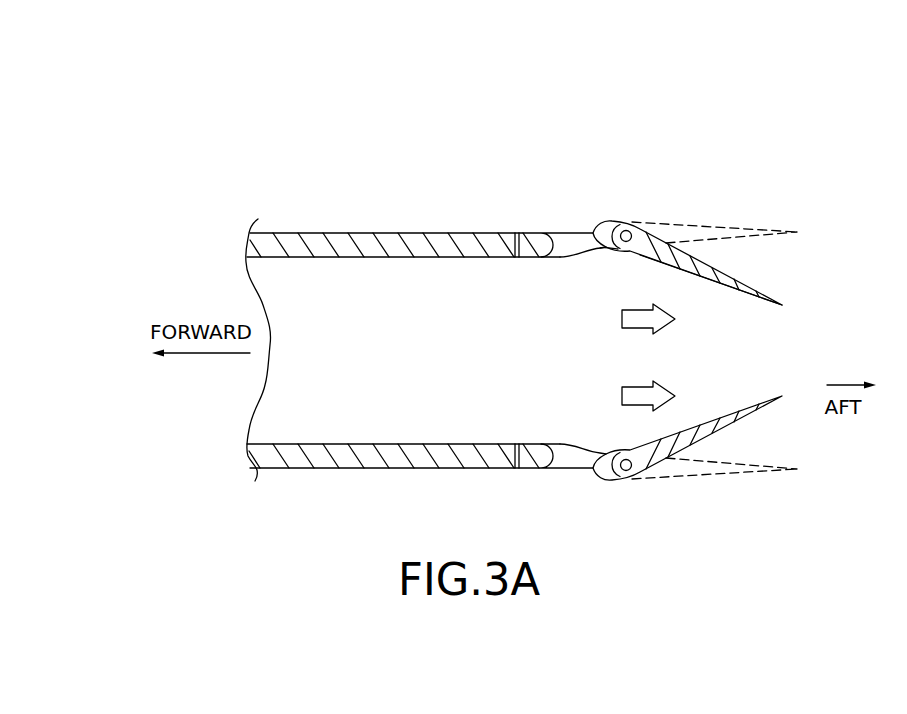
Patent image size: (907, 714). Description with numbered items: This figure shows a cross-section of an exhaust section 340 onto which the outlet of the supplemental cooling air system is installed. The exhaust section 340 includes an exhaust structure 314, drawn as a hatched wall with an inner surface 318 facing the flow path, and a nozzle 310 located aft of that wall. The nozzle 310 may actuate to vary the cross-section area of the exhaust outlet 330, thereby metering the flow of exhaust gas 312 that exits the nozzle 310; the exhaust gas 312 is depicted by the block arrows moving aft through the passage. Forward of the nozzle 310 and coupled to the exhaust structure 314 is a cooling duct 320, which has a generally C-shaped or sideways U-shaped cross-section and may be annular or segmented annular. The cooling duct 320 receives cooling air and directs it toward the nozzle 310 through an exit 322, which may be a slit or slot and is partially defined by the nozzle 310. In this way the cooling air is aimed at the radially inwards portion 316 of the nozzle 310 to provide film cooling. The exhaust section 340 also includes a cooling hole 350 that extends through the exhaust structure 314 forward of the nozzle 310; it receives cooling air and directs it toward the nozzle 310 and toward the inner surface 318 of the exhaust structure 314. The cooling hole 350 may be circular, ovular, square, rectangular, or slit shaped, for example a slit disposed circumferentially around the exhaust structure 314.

The exhaust section 340 is at (576, 285).
The exhaust structure 314 is at (343, 232).
The inner surface 318 is at (392, 258).
The cooling hole 350 is at (517, 224).
The cooling duct 320 is at (569, 224).
The exit 322 is at (604, 257).
The nozzle 310 is at (740, 281).
The radially inwards portion 316 is at (707, 297).
The exhaust gas 312 is at (619, 333).
The exhaust outlet 330 is at (832, 350).